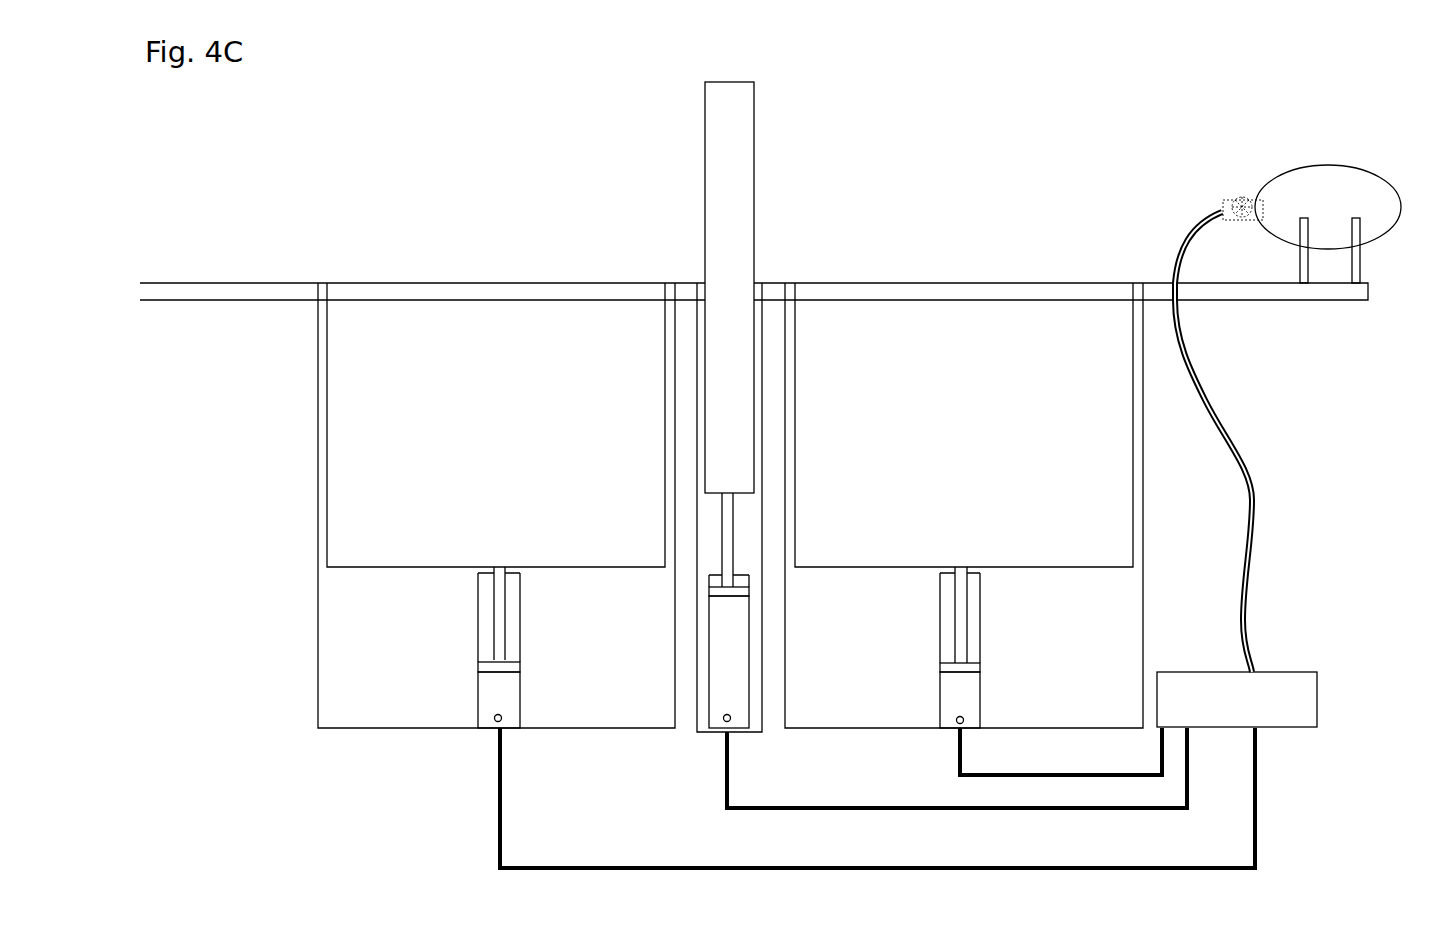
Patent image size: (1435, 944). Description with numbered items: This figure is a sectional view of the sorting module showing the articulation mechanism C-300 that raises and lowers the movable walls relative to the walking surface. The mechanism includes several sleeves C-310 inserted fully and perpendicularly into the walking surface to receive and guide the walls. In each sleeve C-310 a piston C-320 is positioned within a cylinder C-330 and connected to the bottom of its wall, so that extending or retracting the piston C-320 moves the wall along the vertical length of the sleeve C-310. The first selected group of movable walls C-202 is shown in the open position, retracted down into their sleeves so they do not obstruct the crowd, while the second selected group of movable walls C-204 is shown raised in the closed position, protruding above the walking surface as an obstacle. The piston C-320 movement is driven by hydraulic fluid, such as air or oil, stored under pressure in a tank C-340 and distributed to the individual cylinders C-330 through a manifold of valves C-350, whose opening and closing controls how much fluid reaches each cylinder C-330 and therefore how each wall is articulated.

The articulation mechanism C-300 is at (1198, 128).
The first selected group of movable walls C-202 is at (860, 283).
The second selected group of movable walls C-204 is at (705, 105).
The sleeve C-310 is at (318, 688).
The piston C-320 is at (493, 622).
The cylinder C-330 is at (479, 705).
The tank C-340 is at (1322, 250).
The manifold of valves C-350 is at (1315, 670).